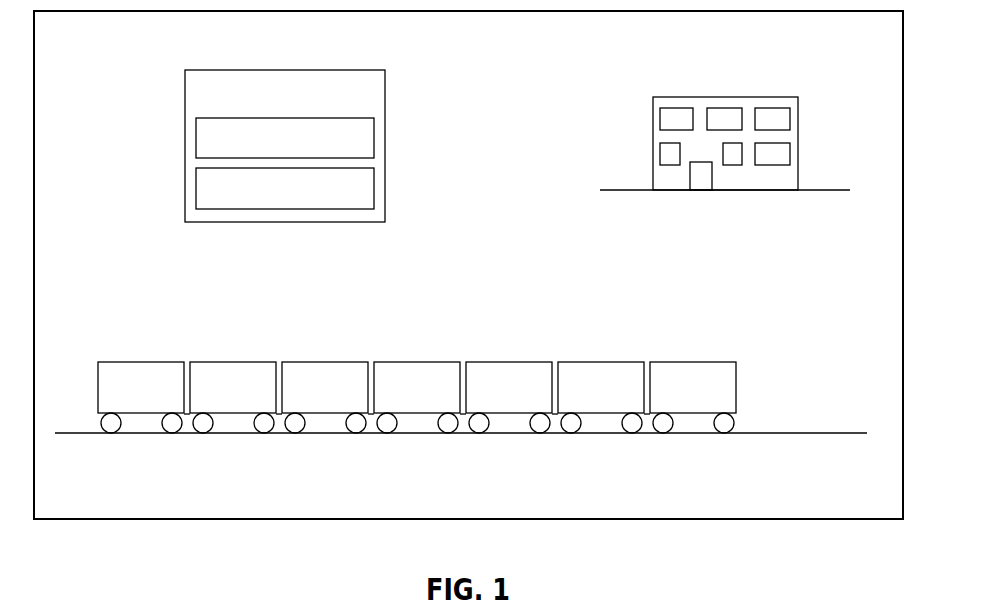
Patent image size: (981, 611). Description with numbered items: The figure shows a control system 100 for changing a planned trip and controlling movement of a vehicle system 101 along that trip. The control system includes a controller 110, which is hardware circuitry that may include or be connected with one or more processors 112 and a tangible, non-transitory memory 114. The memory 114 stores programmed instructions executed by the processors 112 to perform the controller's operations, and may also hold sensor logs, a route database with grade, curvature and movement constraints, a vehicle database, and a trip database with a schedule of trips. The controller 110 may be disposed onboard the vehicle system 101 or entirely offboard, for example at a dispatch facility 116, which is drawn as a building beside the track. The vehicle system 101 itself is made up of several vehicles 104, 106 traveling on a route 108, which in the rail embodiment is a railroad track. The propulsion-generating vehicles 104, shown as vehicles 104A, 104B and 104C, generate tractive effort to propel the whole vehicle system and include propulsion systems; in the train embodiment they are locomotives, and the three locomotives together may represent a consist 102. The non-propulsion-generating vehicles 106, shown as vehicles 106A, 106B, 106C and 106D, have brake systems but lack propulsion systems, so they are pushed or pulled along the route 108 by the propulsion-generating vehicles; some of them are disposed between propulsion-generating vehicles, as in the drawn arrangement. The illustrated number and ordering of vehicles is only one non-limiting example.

The control system 100 is at (156, 63).
The vehicle system 101 is at (413, 386).
The consist 102 is at (143, 394).
The propulsion-generating vehicles 104 is at (140, 400).
The propulsion-generating vehicle 104A is at (142, 416).
The propulsion-generating vehicle 104B is at (325, 416).
The propulsion-generating vehicle 104C is at (692, 416).
The non-propulsion-generating vehicles 106 is at (233, 400).
The non-propulsion-generating vehicle 106A is at (233, 416).
The non-propulsion-generating vehicle 106B is at (417, 363).
The non-propulsion-generating vehicle 106C is at (508, 363).
The non-propulsion-generating vehicle 106D is at (600, 416).
The route 108 is at (802, 434).
The controller 110 is at (329, 139).
The processors 112 is at (374, 137).
The memory 114 is at (374, 185).
The dispatch facility 116 is at (798, 120).